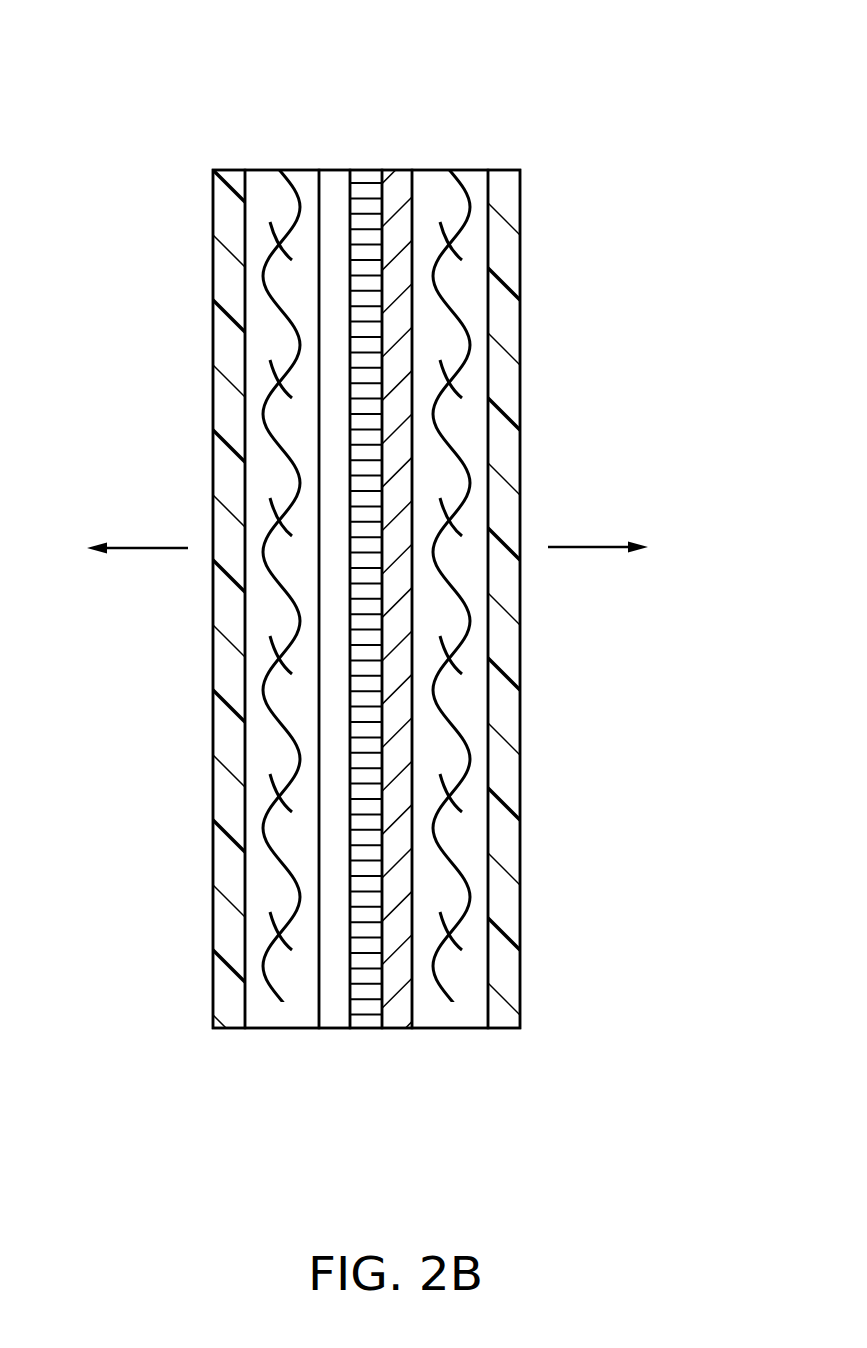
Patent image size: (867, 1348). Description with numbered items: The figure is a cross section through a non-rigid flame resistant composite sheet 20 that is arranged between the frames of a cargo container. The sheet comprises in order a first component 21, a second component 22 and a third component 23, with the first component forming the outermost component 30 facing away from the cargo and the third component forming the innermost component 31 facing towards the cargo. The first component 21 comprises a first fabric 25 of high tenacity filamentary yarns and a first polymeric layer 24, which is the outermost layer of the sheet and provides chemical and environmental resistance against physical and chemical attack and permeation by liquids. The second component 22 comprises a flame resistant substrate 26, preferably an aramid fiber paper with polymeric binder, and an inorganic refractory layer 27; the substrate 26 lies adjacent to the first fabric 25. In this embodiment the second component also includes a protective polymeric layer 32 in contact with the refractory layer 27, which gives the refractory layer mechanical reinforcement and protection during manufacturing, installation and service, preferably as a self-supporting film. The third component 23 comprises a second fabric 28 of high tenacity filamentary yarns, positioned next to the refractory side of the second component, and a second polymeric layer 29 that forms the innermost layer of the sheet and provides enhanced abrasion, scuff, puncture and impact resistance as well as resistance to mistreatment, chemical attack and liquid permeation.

The non-rigid flame resistant composite sheet 20 is at (404, 58).
The first component 21 is at (520, 152).
The second component 22 is at (322, 152).
The third component 23 is at (322, 152).
The first polymeric layer 24 is at (505, 1028).
The first fabric 25 is at (452, 1028).
The flame resistant substrate 26 is at (397, 1028).
The inorganic refractory layer 27 is at (368, 1028).
The second fabric 28 is at (282, 1028).
The second polymeric layer 29 is at (229, 1028).
The outermost component 30 is at (615, 547).
The innermost component 31 is at (123, 548).
The protective polymeric layer 32 is at (337, 1028).